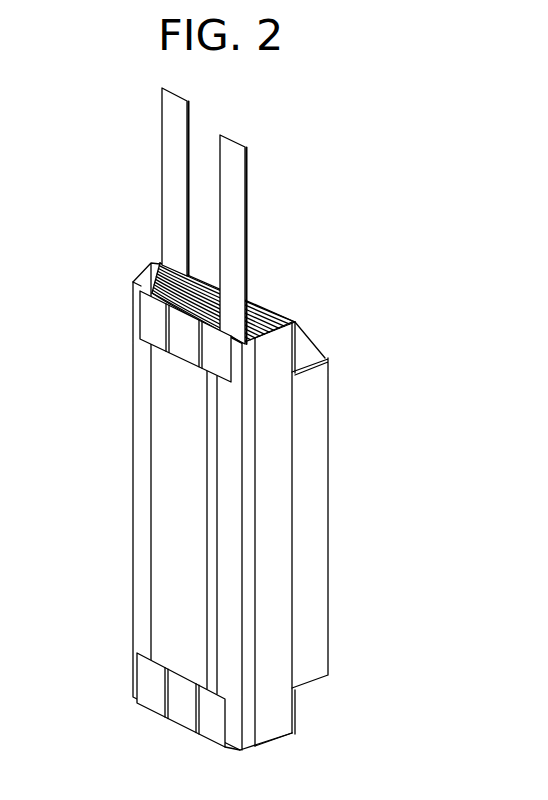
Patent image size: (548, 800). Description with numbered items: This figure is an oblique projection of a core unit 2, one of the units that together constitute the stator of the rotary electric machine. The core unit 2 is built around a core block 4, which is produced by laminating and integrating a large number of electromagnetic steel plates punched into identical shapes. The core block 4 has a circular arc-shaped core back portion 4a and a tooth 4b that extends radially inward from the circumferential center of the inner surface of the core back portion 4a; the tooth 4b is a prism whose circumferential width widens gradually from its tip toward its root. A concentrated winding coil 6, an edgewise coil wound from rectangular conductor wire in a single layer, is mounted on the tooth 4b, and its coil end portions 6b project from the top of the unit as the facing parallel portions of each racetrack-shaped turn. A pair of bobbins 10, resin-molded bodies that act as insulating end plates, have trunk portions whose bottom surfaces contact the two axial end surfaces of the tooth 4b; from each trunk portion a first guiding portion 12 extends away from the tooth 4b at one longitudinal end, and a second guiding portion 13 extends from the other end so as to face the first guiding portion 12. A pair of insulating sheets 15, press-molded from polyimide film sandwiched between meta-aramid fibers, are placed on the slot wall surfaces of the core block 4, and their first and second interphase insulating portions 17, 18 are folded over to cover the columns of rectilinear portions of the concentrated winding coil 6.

The core unit 2 is at (49, 91).
The core block 4 is at (327, 357).
The core back portion 4a is at (307, 350).
The tooth 4b is at (172, 443).
The concentrated winding coil 6 is at (165, 265).
The coil end portion 6b is at (209, 294).
The bobbin 10 is at (260, 297).
The first guiding portion 12 is at (152, 320).
The second guiding portion 13 is at (280, 317).
The insulating sheet 15 is at (131, 496).
The first interphase insulating portion 17 is at (247, 563).
The second interphase insulating portion 18 is at (275, 515).